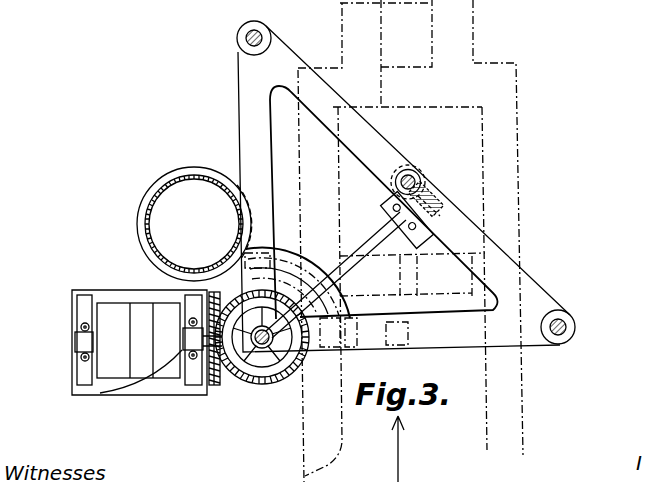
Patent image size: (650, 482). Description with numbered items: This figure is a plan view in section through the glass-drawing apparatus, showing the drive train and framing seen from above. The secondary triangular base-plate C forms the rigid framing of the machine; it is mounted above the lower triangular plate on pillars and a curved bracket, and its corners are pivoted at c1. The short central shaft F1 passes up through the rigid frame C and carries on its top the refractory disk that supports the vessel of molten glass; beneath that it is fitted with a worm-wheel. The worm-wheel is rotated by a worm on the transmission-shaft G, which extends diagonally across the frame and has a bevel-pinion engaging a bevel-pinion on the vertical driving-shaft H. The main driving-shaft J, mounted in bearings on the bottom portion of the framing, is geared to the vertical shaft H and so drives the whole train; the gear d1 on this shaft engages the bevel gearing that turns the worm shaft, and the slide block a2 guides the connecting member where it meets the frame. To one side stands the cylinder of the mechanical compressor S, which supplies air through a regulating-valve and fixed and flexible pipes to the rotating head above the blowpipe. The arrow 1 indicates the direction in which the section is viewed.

The secondary triangular base-plate C is at (502, 273).
The frame pivot c1 is at (587, 308).
The mechanical compressor S is at (140, 226).
The main driving-shaft J is at (80, 385).
The vertical driving-shaft H is at (80, 328).
The gear wheel d1 is at (267, 351).
The transmission-shaft G is at (354, 258).
The short central shaft F1 is at (416, 180).
The slide guide a2 is at (434, 179).
The direction arrow 1 is at (403, 449).